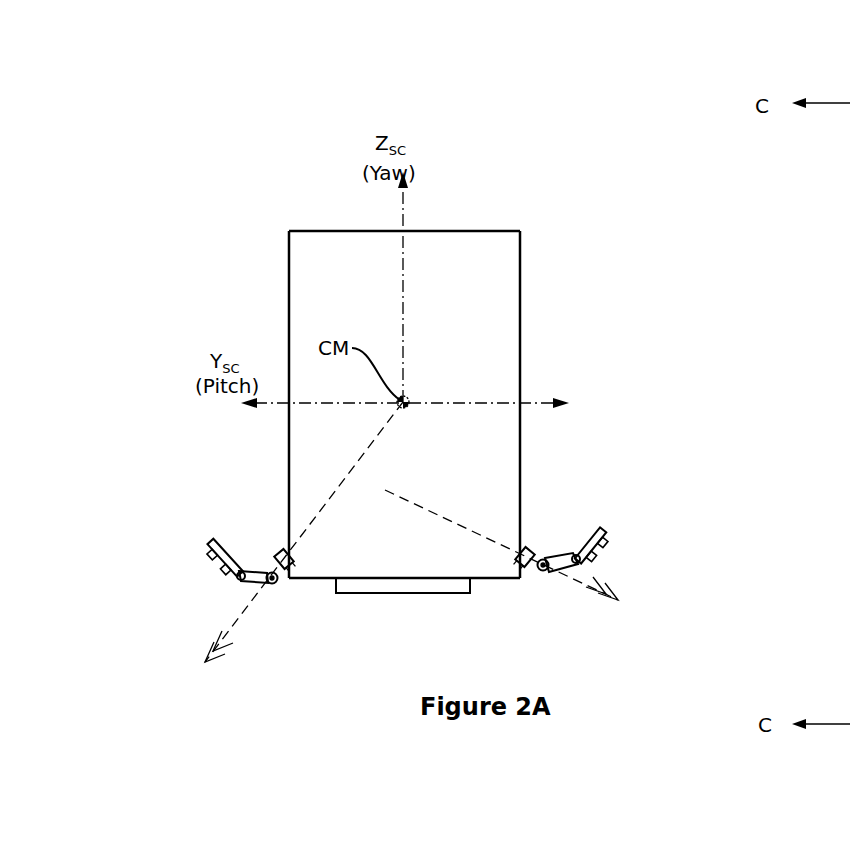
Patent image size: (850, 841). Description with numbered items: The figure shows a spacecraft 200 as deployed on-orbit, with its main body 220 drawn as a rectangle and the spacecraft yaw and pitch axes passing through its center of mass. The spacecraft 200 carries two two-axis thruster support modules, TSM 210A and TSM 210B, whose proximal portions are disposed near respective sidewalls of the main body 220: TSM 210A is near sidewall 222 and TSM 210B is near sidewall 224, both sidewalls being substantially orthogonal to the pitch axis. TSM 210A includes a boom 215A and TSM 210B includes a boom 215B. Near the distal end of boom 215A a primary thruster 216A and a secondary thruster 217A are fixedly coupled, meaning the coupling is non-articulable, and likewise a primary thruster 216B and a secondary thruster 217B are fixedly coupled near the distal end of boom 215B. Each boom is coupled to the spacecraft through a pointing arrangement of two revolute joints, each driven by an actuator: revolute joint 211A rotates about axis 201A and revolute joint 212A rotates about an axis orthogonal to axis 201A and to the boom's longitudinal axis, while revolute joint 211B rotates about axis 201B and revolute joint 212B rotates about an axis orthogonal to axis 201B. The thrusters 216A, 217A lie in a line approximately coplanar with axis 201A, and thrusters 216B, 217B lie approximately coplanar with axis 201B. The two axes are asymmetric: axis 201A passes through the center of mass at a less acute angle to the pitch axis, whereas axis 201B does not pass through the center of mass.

The spacecraft 200 is at (218, 145).
The spacecraft main body 220 is at (442, 265).
The sidewall 222 is at (288, 290).
The sidewall 224 is at (521, 266).
The TSM 210A is at (155, 467).
The TSM 210B is at (668, 447).
The revolute joint 211A is at (277, 553).
The revolute joint 211B is at (522, 548).
The revolute joint 212A is at (274, 586).
The revolute joint 212B is at (547, 578).
The boom 215A is at (250, 560).
The boom 215B is at (562, 555).
The primary thruster 216A is at (220, 560).
The primary thruster 216B is at (605, 550).
The secondary thruster 217A is at (233, 583).
The secondary thruster 217B is at (593, 556).
The axis 201A is at (240, 618).
The axis 201B is at (585, 592).